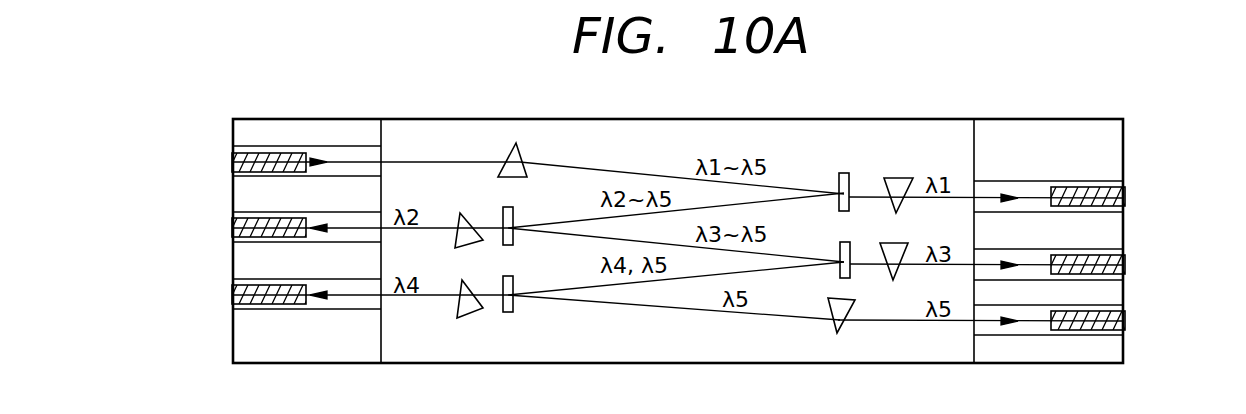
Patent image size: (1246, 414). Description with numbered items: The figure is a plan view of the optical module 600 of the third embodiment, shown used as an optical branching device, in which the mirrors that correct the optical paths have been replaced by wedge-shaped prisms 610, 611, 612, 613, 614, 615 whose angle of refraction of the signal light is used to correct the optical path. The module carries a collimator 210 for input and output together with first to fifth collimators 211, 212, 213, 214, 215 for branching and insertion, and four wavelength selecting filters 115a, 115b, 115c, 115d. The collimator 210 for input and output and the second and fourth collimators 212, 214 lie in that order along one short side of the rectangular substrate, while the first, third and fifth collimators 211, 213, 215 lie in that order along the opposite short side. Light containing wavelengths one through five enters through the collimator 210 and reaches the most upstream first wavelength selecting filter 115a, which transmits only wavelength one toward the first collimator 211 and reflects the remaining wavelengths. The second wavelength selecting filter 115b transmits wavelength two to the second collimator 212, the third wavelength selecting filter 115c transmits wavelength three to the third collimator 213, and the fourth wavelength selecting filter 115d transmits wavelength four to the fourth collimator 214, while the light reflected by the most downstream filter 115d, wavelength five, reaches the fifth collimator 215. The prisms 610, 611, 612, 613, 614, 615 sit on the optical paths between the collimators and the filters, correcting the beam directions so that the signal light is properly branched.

The optical module 600 is at (905, 112).
The collimator for input and output 210 is at (258, 152).
The second collimator 212 is at (258, 217).
The fourth collimator 214 is at (258, 284).
The first collimator 211 is at (1107, 190).
The third collimator 213 is at (1107, 256).
The fifth collimator 215 is at (1107, 312).
The collimating lens / prism for input beam 610 is at (521, 156).
The focusing lens for wavelength λ1 611 is at (900, 183).
The collimating lens for wavelength λ2 612 is at (468, 213).
The focusing lens for wavelength λ3 613 is at (897, 251).
The collimating lens for wavelength λ4 614 is at (465, 311).
The focusing lens for wavelength λ5 615 is at (838, 323).
The first wavelength selecting filter 115a is at (842, 178).
The second wavelength selecting filter 115b is at (510, 233).
The third wavelength selecting filter 115c is at (850, 272).
The fourth wavelength selecting filter 115d is at (510, 302).